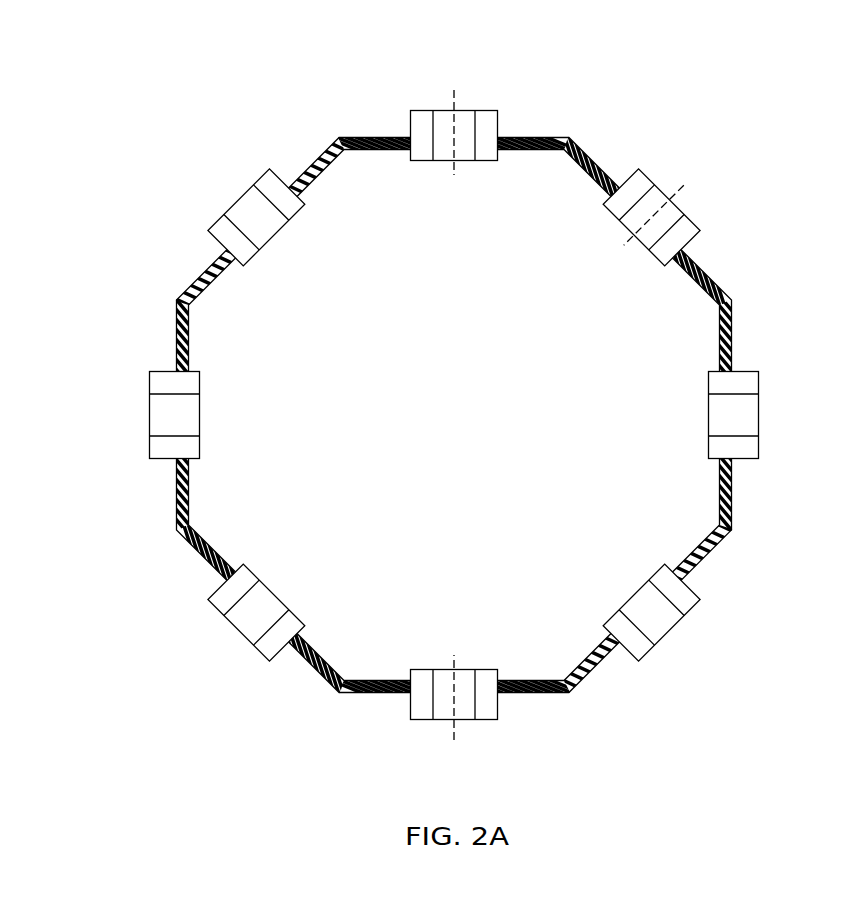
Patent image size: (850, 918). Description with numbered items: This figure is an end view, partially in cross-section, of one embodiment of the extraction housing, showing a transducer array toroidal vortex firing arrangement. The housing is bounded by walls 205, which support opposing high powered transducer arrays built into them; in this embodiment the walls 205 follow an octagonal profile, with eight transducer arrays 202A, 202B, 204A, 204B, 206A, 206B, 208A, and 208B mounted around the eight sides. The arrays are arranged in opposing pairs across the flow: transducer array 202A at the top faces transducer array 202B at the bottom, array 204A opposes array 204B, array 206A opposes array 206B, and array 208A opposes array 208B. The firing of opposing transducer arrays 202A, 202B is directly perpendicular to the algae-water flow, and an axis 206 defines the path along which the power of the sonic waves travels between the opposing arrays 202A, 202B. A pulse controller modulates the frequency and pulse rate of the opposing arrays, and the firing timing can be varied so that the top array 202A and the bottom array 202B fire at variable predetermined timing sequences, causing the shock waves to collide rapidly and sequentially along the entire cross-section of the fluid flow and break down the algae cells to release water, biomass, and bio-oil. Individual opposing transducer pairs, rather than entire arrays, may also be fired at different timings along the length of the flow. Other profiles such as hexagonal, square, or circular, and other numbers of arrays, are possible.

The walls 205 is at (176, 333).
The transducer array 202A is at (438, 110).
The transducer array 202B is at (470, 720).
The transducer array 204A is at (658, 188).
The transducer array 204B is at (250, 643).
The transducer array 206A is at (760, 397).
The transducer array 206B is at (150, 437).
The transducer array 208A is at (683, 620).
The transducer array 208B is at (225, 215).
The axis 206 is at (460, 90).